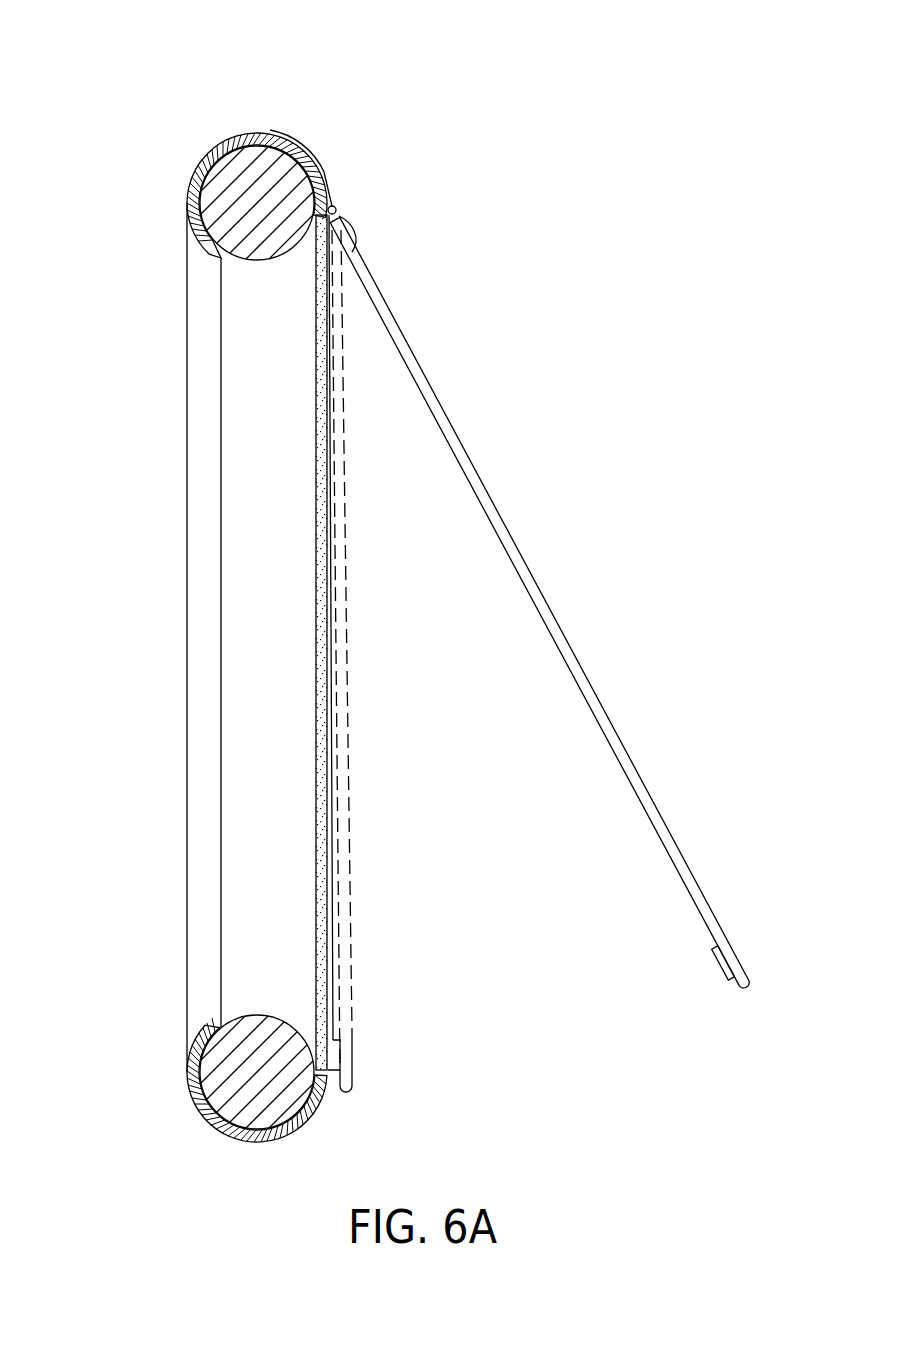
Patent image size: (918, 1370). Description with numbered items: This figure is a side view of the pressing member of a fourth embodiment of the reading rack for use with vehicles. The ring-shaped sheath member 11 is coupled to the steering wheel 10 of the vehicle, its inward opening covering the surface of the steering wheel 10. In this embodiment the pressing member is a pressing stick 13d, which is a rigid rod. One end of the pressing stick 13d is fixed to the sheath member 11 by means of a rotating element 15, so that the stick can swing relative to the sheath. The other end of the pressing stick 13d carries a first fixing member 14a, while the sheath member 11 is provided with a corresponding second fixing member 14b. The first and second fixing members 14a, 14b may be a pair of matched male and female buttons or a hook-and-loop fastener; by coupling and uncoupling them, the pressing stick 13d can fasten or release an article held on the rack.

The steering wheel 10 is at (232, 178).
The sheath member 11 is at (197, 249).
The rotating element 15 is at (337, 207).
The pressing stick 13d is at (602, 703).
The first fixing member 14a is at (712, 960).
The second fixing member 14b is at (333, 1072).